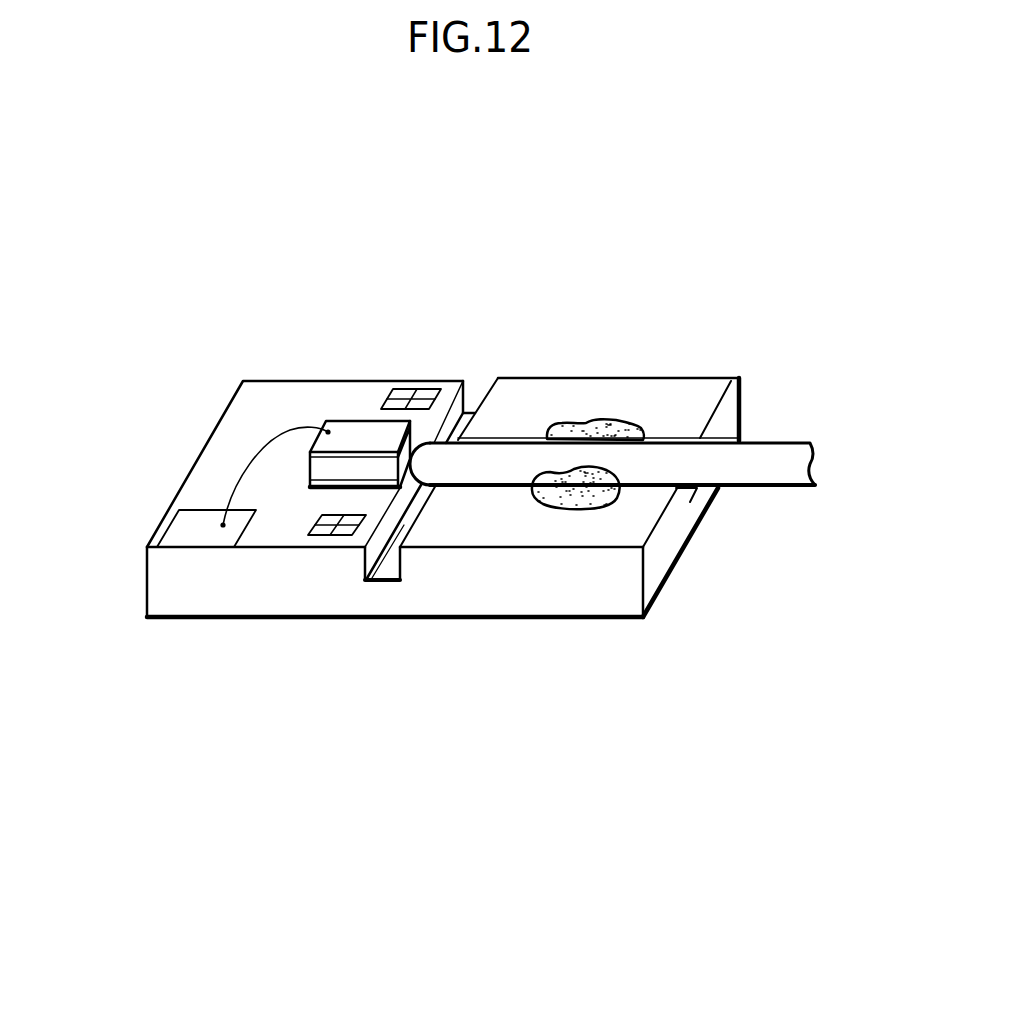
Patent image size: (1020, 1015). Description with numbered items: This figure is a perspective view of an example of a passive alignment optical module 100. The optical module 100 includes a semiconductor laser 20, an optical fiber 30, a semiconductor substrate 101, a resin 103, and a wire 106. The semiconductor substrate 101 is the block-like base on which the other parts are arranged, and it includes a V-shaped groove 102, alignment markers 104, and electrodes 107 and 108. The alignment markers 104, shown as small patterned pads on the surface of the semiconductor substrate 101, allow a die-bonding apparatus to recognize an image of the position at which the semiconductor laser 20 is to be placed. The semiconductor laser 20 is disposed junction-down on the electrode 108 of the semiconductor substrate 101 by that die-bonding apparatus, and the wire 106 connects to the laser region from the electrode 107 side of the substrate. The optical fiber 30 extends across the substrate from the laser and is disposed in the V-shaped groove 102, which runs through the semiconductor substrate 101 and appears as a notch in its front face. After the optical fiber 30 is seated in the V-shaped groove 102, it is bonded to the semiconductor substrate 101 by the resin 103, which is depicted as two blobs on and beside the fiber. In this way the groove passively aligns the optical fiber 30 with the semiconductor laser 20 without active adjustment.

The optical module 100 is at (430, 708).
The semiconductor substrate 101 is at (510, 580).
The V-shaped groove 102 is at (674, 503).
The resin 103 is at (611, 474).
The alignment markers 104 is at (308, 517).
The wire 106 is at (246, 461).
The electrode 107 is at (191, 527).
The electrode 108 is at (373, 492).
The semiconductor laser 20 is at (348, 435).
The optical fiber 30 is at (499, 457).